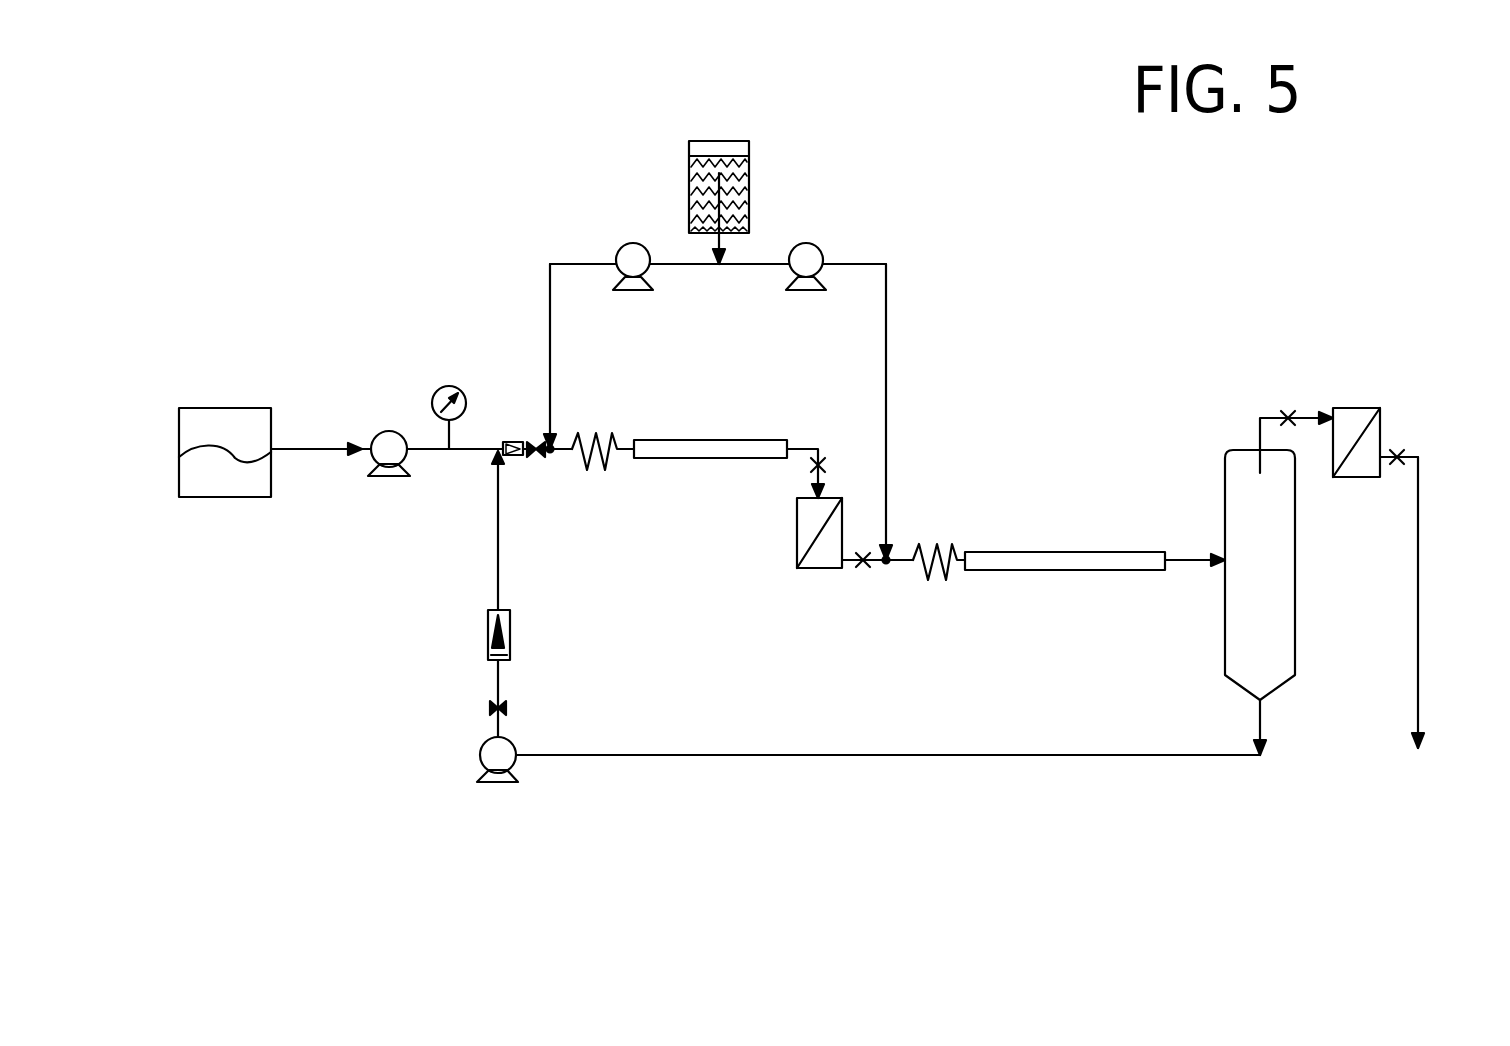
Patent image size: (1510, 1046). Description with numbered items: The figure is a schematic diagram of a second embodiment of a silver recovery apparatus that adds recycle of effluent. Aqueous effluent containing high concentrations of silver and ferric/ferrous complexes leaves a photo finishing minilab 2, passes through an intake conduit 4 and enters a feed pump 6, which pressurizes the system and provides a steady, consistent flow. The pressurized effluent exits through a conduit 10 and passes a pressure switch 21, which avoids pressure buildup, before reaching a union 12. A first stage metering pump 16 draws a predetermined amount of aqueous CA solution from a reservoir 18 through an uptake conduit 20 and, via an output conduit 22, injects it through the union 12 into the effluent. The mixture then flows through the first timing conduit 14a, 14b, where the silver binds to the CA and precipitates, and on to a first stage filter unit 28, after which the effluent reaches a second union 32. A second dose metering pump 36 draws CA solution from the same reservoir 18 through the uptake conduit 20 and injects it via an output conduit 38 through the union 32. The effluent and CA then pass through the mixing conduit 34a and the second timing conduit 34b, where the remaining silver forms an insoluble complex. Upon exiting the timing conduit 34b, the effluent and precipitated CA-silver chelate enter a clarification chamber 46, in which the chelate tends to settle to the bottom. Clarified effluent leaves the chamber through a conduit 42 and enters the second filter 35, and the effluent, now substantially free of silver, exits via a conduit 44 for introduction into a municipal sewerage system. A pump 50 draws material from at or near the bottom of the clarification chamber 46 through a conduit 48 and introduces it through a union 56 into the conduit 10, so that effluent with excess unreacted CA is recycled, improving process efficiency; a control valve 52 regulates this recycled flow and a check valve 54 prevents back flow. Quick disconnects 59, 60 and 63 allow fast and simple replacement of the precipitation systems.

The photo finishing minilab 2 is at (210, 408).
The intake conduit 4 is at (338, 445).
The feed pump 6 is at (381, 504).
The conduit 10 is at (442, 409).
The union 12 is at (550, 456).
The first timing conduit 14a is at (592, 432).
The first timing conduit 14b is at (729, 440).
The first stage metering pump 16 is at (631, 289).
The reservoir 18 is at (720, 140).
The uptake conduit 20 is at (706, 264).
The pressure switch 21 is at (427, 365).
The output conduit 22 is at (550, 358).
The heat exchanger 28 is at (749, 548).
The union 32 is at (887, 566).
The mixing conduit 34a is at (975, 536).
The second timing conduit 34b is at (1095, 531).
The filter 35 is at (1401, 417).
The second dose metering pump 36 is at (806, 290).
The output conduit 38 is at (886, 350).
The conduit 42 is at (1291, 410).
The conduit 44 is at (1420, 601).
The clarification chamber 46 is at (1297, 620).
The conduit 48 is at (1265, 741).
The pump 50 is at (481, 747).
The control valve 52 is at (488, 705).
The check valve 54 is at (488, 645).
The union 56 is at (499, 440).
The quick disconnect 59 is at (566, 451).
The quick disconnect 60 is at (825, 604).
The quick disconnect 63 is at (1437, 437).